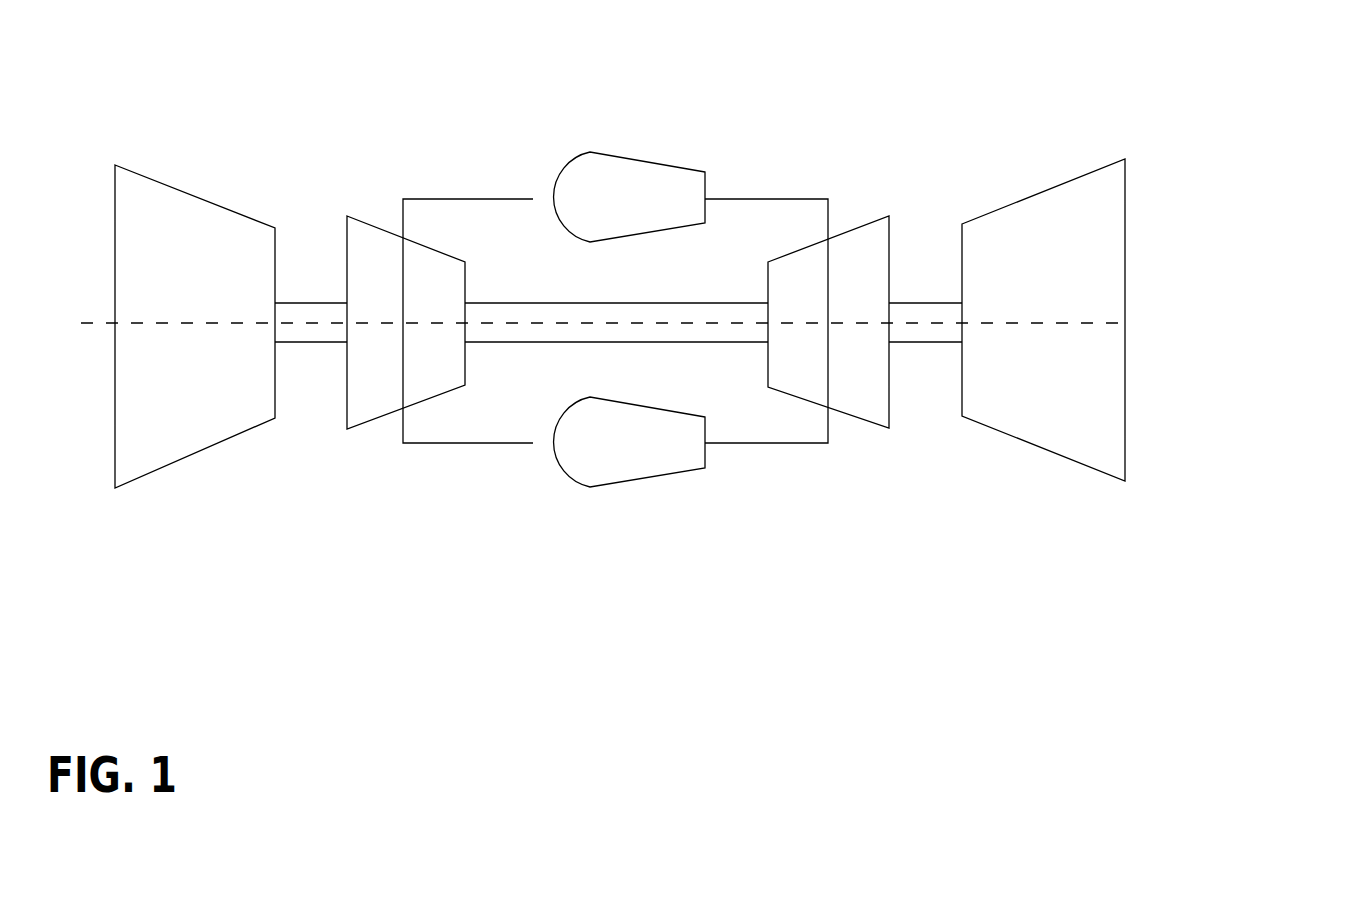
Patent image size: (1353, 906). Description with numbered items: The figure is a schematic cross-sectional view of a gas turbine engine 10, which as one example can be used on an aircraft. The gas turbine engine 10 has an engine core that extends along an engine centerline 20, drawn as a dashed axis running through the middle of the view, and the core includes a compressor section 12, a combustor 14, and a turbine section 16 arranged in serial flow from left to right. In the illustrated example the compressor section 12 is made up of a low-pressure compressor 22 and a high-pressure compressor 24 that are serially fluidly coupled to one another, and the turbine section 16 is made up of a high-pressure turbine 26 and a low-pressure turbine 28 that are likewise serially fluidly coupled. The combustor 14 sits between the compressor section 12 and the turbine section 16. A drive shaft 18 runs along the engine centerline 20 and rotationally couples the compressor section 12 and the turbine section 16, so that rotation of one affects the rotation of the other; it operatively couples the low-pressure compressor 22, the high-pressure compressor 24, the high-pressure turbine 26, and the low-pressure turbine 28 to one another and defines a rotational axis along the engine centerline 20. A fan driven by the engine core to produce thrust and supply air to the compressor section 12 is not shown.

The gas turbine engine 10 is at (1308, 171).
The compressor section 12 is at (333, 178).
The combustor 14 is at (570, 472).
The turbine section 16 is at (1032, 148).
The drive shaft 18 is at (620, 302).
The engine centerline 20 is at (1124, 323).
The low-pressure compressor 22 is at (240, 212).
The high-pressure compressor 24 is at (348, 430).
The high-pressure turbine 26 is at (890, 247).
The low-pressure turbine 28 is at (1124, 215).